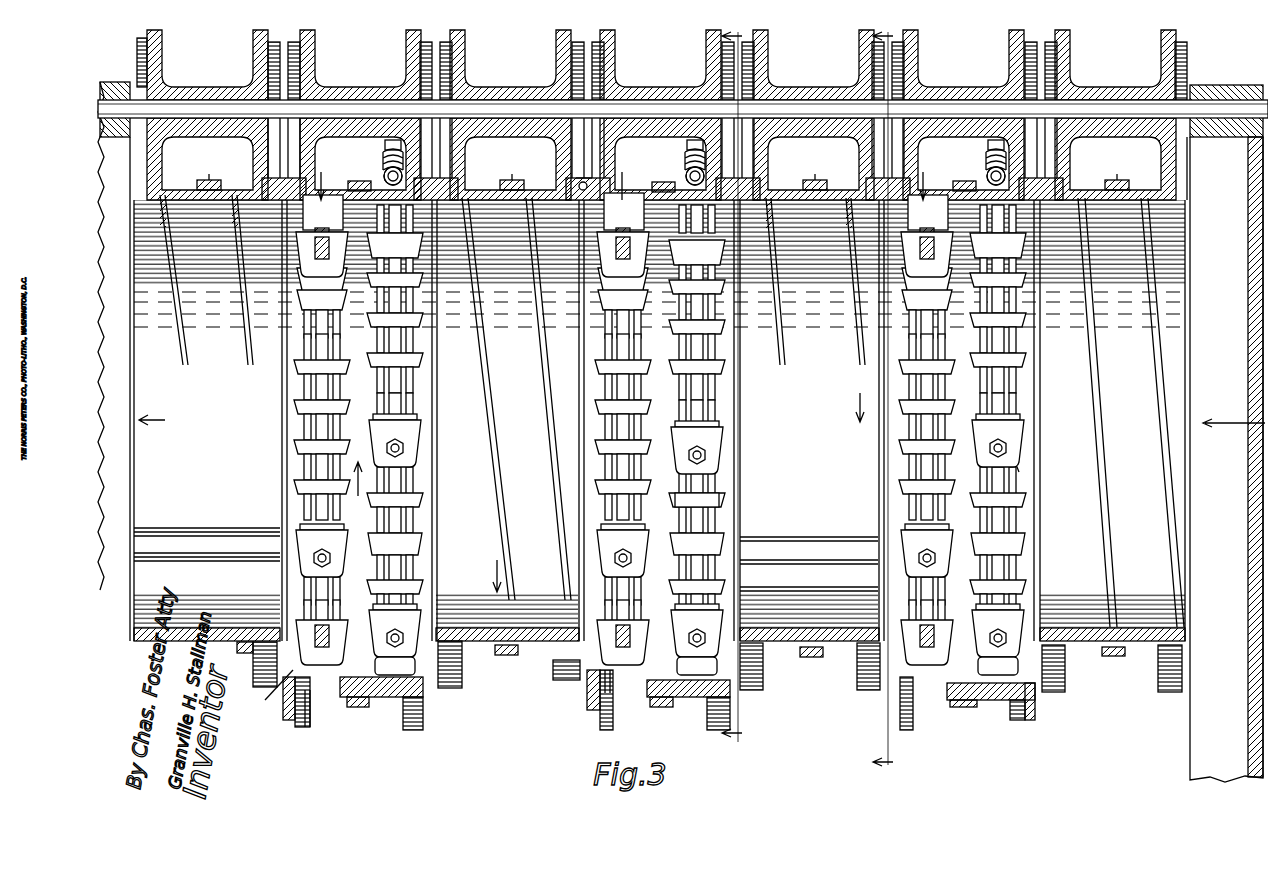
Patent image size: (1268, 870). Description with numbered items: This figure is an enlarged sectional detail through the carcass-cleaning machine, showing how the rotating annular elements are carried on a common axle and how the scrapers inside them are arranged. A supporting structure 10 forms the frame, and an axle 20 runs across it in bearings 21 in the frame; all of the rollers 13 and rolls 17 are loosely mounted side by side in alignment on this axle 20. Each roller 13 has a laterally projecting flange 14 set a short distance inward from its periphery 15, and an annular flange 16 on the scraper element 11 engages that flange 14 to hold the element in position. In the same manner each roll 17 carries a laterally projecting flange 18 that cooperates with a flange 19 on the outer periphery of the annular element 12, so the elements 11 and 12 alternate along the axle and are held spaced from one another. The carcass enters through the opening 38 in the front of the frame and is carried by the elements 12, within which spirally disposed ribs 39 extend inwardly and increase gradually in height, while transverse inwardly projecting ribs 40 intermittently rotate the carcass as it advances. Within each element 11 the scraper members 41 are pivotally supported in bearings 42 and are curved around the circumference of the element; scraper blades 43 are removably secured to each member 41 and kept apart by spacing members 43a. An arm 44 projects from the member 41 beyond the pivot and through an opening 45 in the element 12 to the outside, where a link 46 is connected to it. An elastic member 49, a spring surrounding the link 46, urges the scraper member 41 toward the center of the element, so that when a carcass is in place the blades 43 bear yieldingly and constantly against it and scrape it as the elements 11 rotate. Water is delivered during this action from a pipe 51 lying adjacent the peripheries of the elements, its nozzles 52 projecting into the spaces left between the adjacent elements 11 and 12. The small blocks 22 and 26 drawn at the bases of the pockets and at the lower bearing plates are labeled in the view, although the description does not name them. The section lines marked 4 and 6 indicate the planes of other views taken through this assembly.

The section line 4- 4 is at (886, 400).
The section line 6- 6 is at (736, 388).
The supporting structure 10 is at (1248, 197).
The annular element 11 is at (268, 696).
The annular element 12 is at (657, 389).
The roller 13 is at (353, 90).
The laterally projecting flange 14 is at (592, 50).
The periphery 15 is at (605, 38).
The annular flange 16 is at (598, 185).
The roll 17 is at (215, 90).
The laterally projecting flange 18 is at (750, 52).
The flange 19 is at (770, 190).
The axle 20 is at (1093, 108).
The bearing 21 is at (118, 90).
The mounting block 22 is at (209, 178).
The support block 26 is at (653, 446).
The opening 38 is at (1248, 490).
The spirally disposed projecting rib 39 is at (245, 348).
The inwardly projecting rib 40 is at (188, 550).
The scraper member 41 is at (900, 668).
The bearing 42 is at (710, 504).
The scraper blade 43 is at (320, 390).
The spacing member 43a is at (697, 412).
The arm 44 is at (412, 186).
The opening 45 is at (905, 693).
The link 46 is at (1075, 166).
The elastic member 49 is at (385, 148).
The pipe 51 is at (578, 185).
The nozzle 52 is at (607, 190).